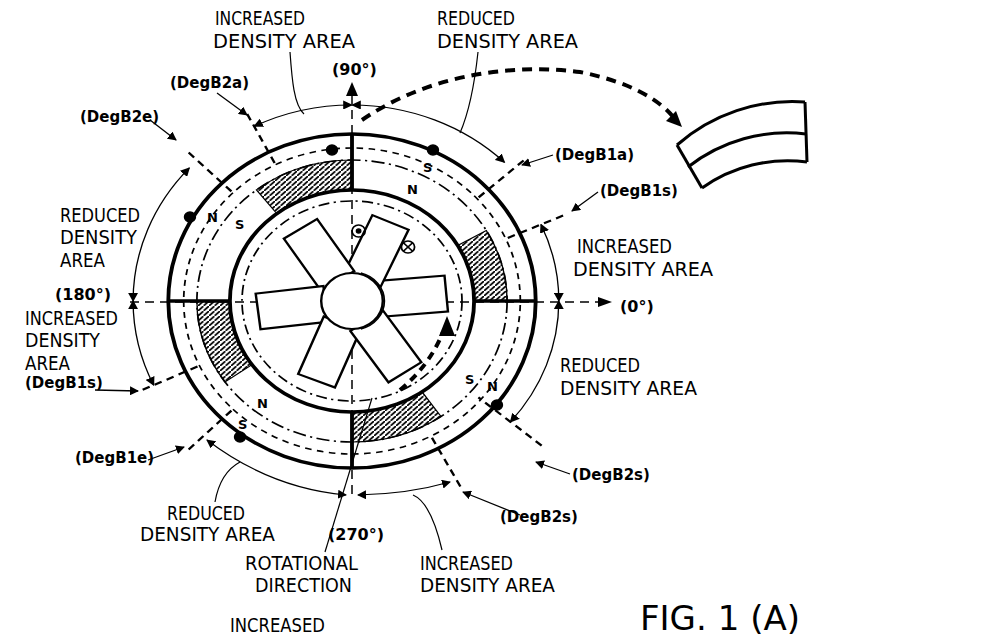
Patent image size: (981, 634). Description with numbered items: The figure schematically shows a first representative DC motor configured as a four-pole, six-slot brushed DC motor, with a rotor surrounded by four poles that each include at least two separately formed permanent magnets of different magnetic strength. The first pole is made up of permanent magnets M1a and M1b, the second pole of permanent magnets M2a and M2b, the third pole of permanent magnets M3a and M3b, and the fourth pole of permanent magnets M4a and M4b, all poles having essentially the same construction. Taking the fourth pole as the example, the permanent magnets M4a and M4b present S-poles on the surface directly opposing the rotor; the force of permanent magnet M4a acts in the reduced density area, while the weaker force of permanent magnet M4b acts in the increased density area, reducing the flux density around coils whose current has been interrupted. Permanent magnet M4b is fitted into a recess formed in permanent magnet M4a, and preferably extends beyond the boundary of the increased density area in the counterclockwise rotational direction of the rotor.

The permanent magnet M1a is at (462, 140).
The permanent magnet M1b is at (484, 217).
The permanent magnet M2a is at (507, 428).
The permanent magnet M2b is at (462, 440).
The permanent magnet M3a is at (240, 440).
The permanent magnet M3b is at (212, 386).
The permanent magnet M4a is at (190, 217).
The permanent magnet M4b is at (258, 160).